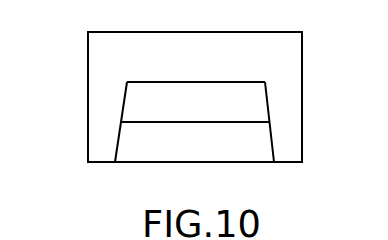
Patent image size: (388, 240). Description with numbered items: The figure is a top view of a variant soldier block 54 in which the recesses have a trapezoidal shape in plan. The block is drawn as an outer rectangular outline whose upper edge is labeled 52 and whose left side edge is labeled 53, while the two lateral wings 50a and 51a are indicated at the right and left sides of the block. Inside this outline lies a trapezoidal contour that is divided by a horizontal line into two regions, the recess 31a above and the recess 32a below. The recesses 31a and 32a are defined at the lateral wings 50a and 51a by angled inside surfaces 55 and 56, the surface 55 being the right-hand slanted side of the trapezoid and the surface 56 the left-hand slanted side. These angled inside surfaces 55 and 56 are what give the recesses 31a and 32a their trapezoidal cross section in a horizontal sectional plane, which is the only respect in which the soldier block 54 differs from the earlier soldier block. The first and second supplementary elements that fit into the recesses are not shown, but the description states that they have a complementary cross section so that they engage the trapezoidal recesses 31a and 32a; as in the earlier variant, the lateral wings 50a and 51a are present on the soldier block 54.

The outer wall of housing 52 is at (307, 43).
The side wall of housing 53 is at (87, 70).
The soldier block 54 is at (294, 63).
The lateral wing 51a is at (100, 133).
The lateral wing 50a is at (291, 125).
The angled inside surface 55 is at (267, 100).
The angled inside surface 56 is at (125, 105).
The recess 31a is at (172, 108).
The recess 32a is at (244, 143).